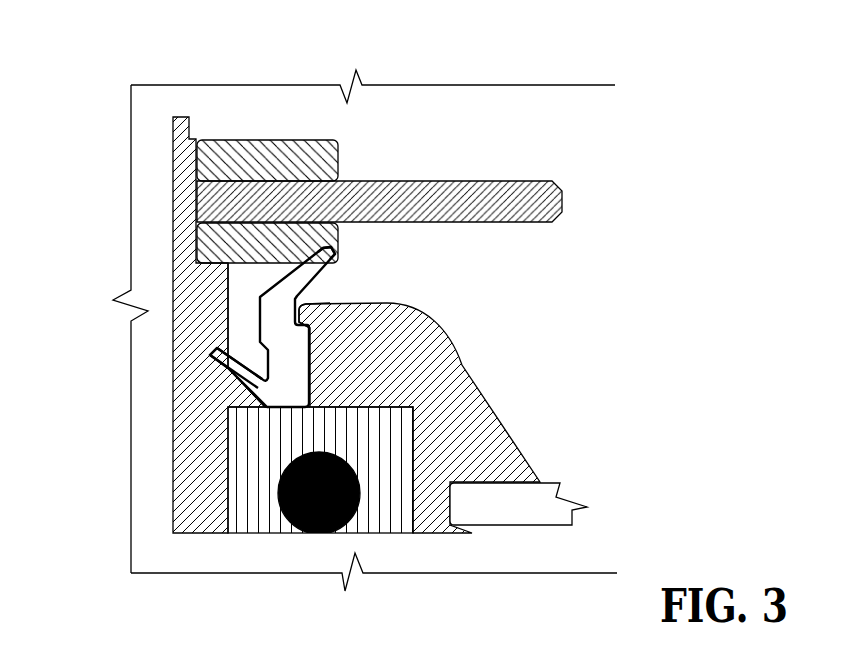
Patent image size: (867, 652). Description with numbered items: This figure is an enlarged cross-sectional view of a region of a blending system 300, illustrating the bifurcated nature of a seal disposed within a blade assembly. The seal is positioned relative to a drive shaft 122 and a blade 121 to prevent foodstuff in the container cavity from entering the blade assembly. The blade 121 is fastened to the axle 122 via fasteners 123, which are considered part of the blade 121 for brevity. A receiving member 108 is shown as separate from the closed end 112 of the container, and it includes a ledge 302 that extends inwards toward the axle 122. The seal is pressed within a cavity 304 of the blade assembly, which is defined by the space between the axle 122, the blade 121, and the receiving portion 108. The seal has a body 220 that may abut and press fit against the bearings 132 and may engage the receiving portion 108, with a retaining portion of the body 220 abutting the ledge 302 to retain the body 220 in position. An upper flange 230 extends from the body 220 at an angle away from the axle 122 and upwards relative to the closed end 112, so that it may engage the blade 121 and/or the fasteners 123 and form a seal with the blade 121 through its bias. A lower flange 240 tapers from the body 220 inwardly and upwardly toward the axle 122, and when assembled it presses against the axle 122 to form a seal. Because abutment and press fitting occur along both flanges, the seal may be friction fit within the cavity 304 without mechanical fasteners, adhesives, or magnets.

The blending system 300 is at (678, 93).
The drive shaft 122 is at (177, 172).
The fasteners 123 is at (312, 157).
The blade 121 is at (458, 181).
The receiving member 108 is at (447, 407).
The ledge 302 is at (306, 318).
The cavity 304 is at (244, 306).
The body 220 is at (297, 369).
The upper flange 230 is at (300, 278).
The lower flange 240 is at (252, 383).
The closed end 112 is at (560, 483).
The bearings 132 is at (365, 522).